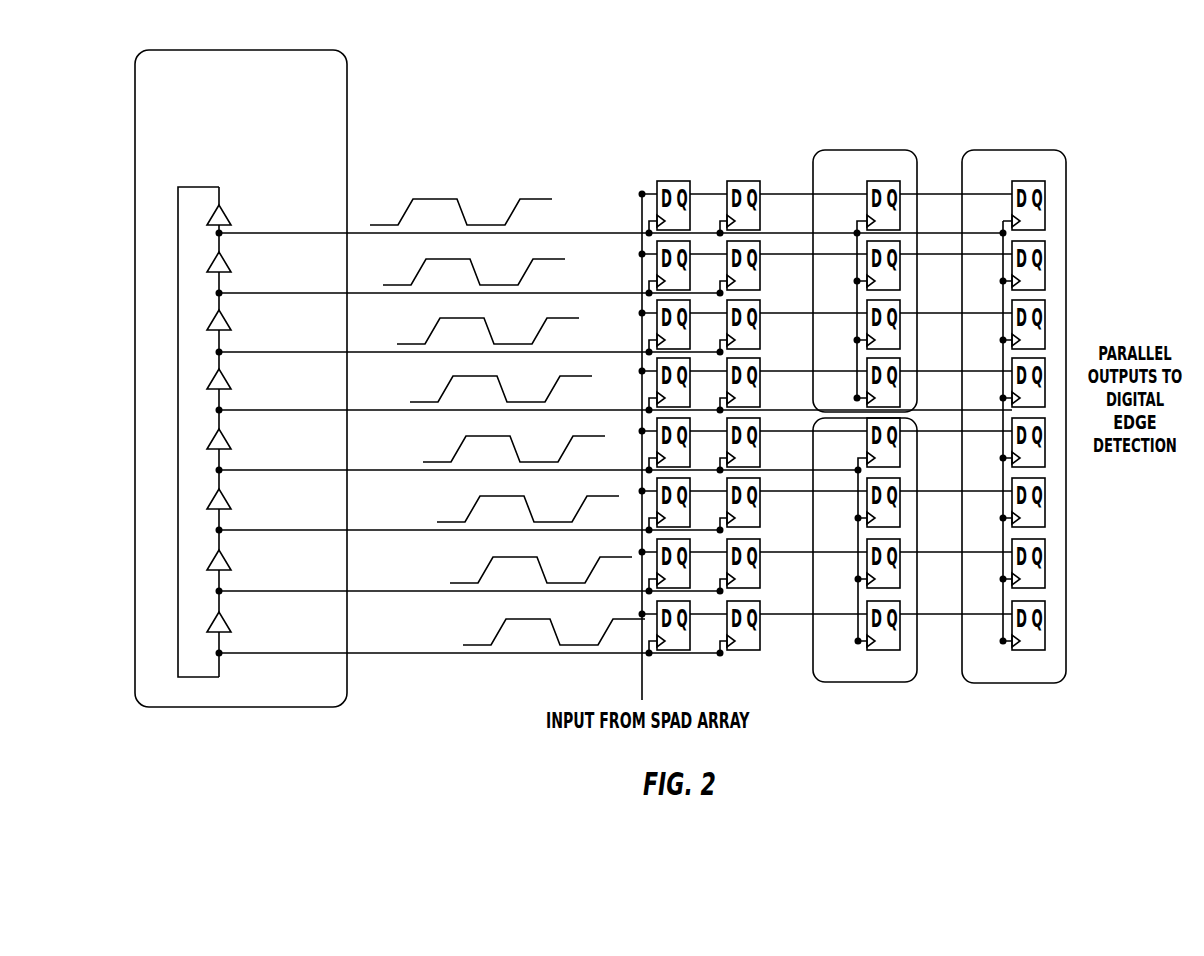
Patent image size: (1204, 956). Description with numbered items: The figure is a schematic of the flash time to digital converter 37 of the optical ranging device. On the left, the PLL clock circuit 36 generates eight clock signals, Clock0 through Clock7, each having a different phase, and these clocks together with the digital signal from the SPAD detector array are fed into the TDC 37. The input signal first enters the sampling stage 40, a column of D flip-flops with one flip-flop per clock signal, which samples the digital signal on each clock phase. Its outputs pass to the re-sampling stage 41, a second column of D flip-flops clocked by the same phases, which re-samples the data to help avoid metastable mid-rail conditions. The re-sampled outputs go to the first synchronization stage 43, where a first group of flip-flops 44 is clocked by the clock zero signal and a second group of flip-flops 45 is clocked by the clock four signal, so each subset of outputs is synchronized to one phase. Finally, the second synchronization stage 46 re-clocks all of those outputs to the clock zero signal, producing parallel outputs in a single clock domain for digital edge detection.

The PLL clock circuit 36 is at (350, 62).
The flash time to digital converter 37 is at (1086, 66).
The sampling stage 40 is at (674, 165).
The re-sampling stage 41 is at (745, 165).
The first synchronization stage 43 is at (889, 398).
The first group of flip-flops 44 is at (916, 152).
The second group of flip-flops 45 is at (905, 683).
The second synchronization stage 46 is at (1064, 152).